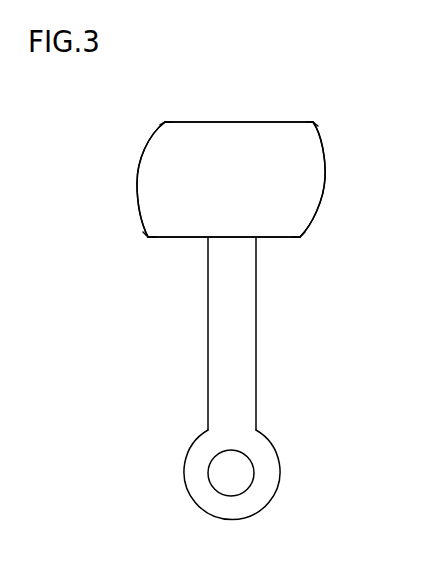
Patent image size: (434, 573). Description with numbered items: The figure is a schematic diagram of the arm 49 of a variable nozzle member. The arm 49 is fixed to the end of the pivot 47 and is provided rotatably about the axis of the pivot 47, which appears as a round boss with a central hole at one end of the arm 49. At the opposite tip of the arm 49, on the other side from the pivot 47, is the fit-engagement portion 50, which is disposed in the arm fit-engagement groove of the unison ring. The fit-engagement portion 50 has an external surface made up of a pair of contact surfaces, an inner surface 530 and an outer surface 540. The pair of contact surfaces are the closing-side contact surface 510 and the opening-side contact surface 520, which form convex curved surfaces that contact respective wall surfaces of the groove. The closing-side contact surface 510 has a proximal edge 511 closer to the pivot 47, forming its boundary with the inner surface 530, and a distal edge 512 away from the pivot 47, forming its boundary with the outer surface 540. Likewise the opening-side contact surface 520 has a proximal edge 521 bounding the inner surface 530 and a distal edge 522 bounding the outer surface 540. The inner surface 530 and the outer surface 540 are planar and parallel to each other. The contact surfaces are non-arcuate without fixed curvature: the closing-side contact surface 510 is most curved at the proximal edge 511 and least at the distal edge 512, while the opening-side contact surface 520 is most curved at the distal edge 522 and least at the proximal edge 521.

The pivot 47 is at (239, 472).
The arm 49 is at (239, 340).
The fit-engagement portion 50 is at (232, 138).
The closing-side contact surface 510 is at (325, 178).
The proximal edge 511 is at (300, 237).
The distal edge 512 is at (313, 122).
The opening-side contact surface 520 is at (137, 184).
The proximal edge 521 is at (148, 237).
The distal edge 522 is at (165, 122).
The inner surface 530 is at (175, 238).
The outer surface 540 is at (182, 120).